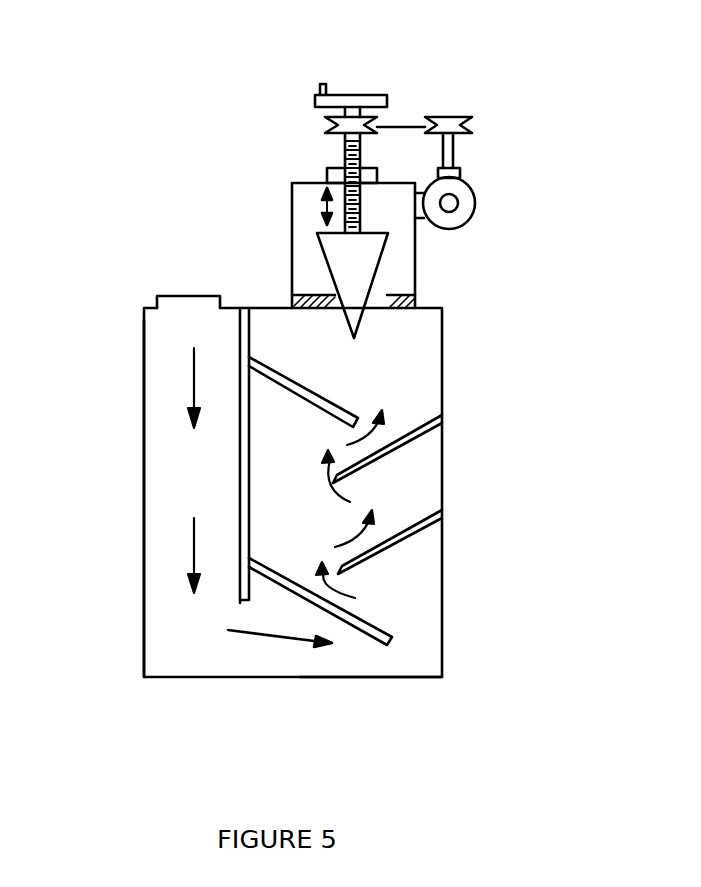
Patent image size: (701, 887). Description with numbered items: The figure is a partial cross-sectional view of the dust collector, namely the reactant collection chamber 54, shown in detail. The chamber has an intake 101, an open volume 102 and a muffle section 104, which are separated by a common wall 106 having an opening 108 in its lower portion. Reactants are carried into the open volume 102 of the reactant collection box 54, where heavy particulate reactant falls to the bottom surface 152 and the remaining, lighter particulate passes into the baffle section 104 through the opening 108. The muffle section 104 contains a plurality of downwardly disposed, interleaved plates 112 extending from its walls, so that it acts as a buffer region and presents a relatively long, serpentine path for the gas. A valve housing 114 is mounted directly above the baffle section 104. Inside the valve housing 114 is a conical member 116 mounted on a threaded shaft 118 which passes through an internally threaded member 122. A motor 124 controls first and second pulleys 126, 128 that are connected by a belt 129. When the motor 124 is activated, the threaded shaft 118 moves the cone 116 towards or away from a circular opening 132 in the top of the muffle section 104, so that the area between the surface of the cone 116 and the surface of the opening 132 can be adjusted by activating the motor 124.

The reactant collection chamber 54 is at (145, 635).
The intake 101 is at (157, 298).
The open volume 102 is at (197, 487).
The muffle section 104 is at (442, 453).
The common wall 106 is at (240, 603).
The opening 108 is at (250, 645).
The interleaved plates 112 is at (300, 383).
The valve housing 114 is at (293, 270).
The conical member 116 is at (373, 267).
The threaded shaft 118 is at (345, 150).
The internally threaded member 122 is at (327, 175).
The motor 124 is at (477, 202).
The first pulley 126 is at (458, 115).
The second pulley 128 is at (335, 132).
The belt 129 is at (400, 127).
The circular opening 132 is at (403, 308).
The bottom surface 152 is at (409, 678).